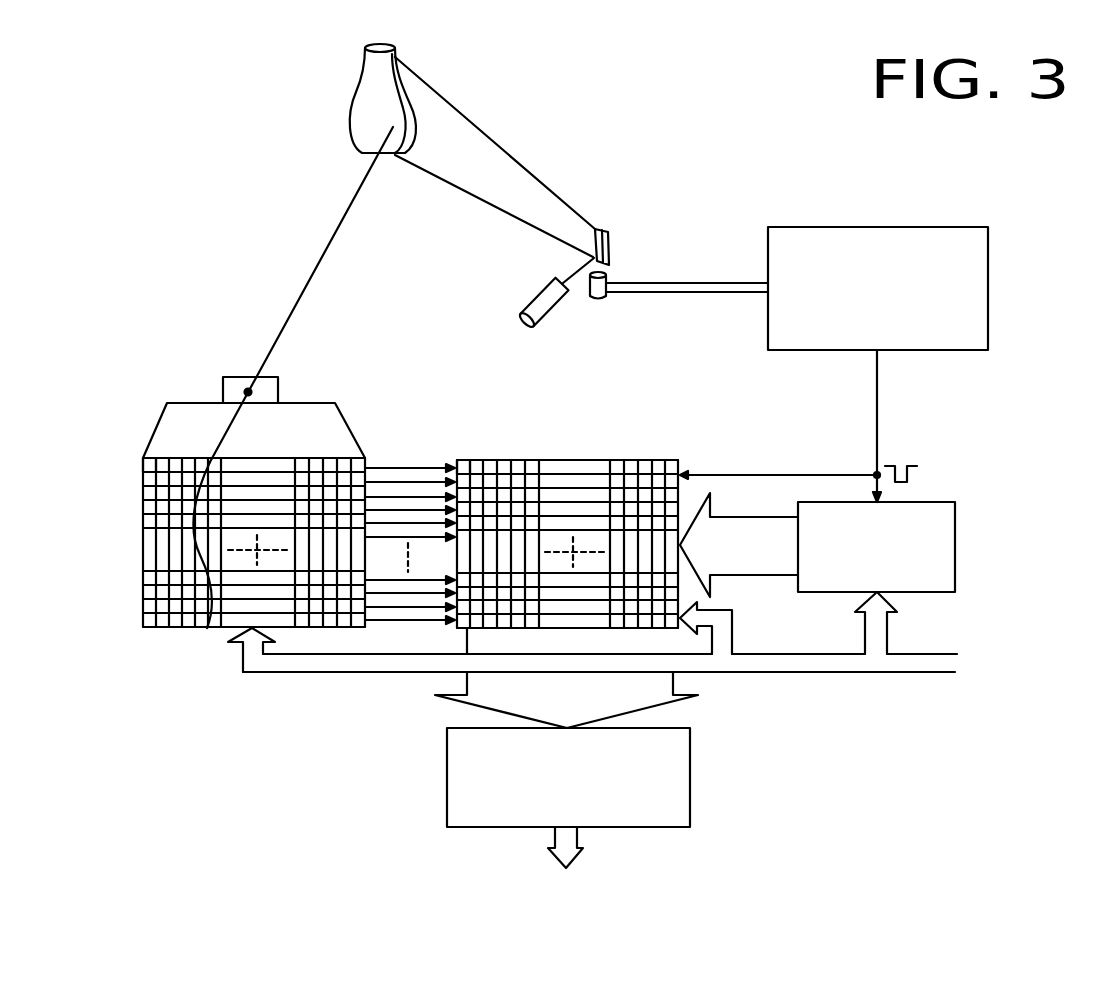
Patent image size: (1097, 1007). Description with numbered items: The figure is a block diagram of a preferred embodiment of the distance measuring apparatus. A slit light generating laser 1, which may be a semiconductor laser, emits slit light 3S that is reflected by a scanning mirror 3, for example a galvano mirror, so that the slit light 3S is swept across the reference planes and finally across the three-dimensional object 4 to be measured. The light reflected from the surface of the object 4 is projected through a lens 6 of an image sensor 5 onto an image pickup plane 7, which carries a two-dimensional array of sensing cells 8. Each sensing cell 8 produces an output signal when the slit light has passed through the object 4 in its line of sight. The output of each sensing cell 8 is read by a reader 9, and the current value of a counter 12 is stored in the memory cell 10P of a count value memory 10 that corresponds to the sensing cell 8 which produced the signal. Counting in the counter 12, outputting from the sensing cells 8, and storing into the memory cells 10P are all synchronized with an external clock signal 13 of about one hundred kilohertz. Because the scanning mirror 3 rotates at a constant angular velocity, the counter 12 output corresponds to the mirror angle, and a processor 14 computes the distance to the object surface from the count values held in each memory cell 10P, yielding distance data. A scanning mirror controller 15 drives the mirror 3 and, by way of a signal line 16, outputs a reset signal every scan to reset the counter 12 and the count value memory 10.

The slit light generating laser 1 is at (557, 305).
The scanning mirror 3 is at (608, 237).
The slit light 3S is at (513, 153).
The three-dimensional object 4 is at (352, 110).
The image sensor 5 is at (307, 415).
The lens 6 is at (240, 380).
The image pickup plane 7 is at (142, 548).
The sensing cell 8 is at (142, 466).
The reader 9 is at (410, 458).
The count value memory 10 is at (582, 465).
The memory cell 10P is at (462, 460).
The counter 12 is at (955, 545).
The external clock signal 13 is at (622, 660).
The processor 14 is at (690, 782).
The scanning mirror controller 15 is at (988, 293).
The timing signal line 16 is at (803, 426).